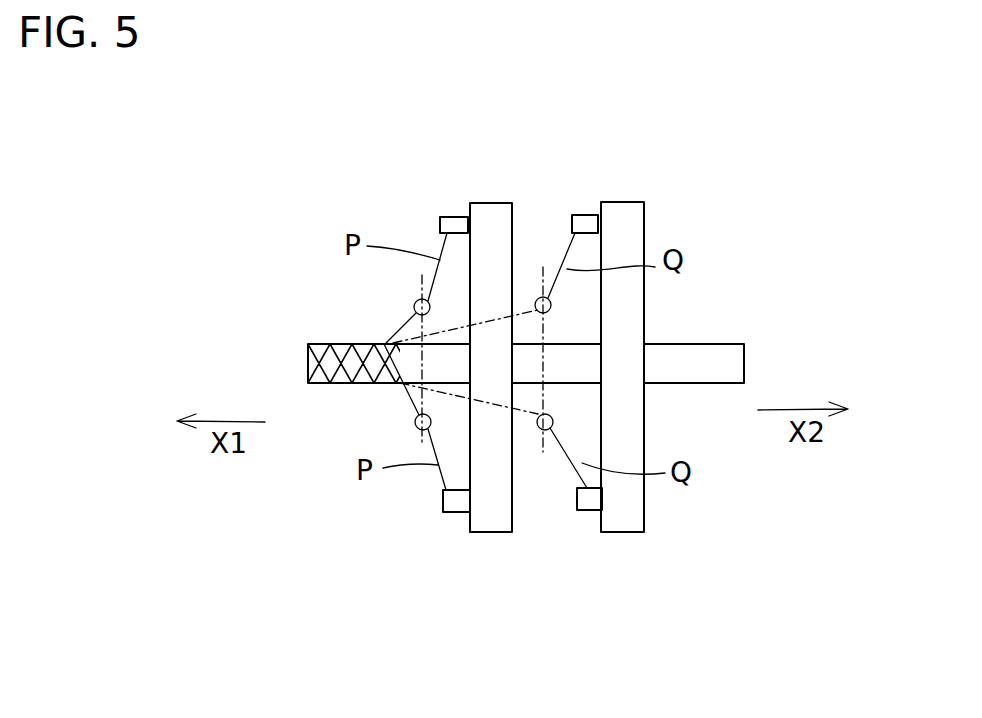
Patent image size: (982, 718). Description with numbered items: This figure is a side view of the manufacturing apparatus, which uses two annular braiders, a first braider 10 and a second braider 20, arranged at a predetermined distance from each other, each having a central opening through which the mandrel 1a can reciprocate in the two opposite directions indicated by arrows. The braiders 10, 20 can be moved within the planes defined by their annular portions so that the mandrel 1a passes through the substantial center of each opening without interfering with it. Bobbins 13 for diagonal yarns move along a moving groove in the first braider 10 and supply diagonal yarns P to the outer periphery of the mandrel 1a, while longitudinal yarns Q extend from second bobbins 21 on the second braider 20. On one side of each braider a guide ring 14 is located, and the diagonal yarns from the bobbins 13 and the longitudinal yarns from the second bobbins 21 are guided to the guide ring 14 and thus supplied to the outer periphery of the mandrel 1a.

The mandrel 1a is at (744, 355).
The first braider 10 is at (498, 517).
The second braider 20 is at (635, 518).
The bobbins for diagonal yarns 13 is at (448, 217).
The guide ring 14 is at (413, 423).
The second bobbins 21 is at (580, 215).